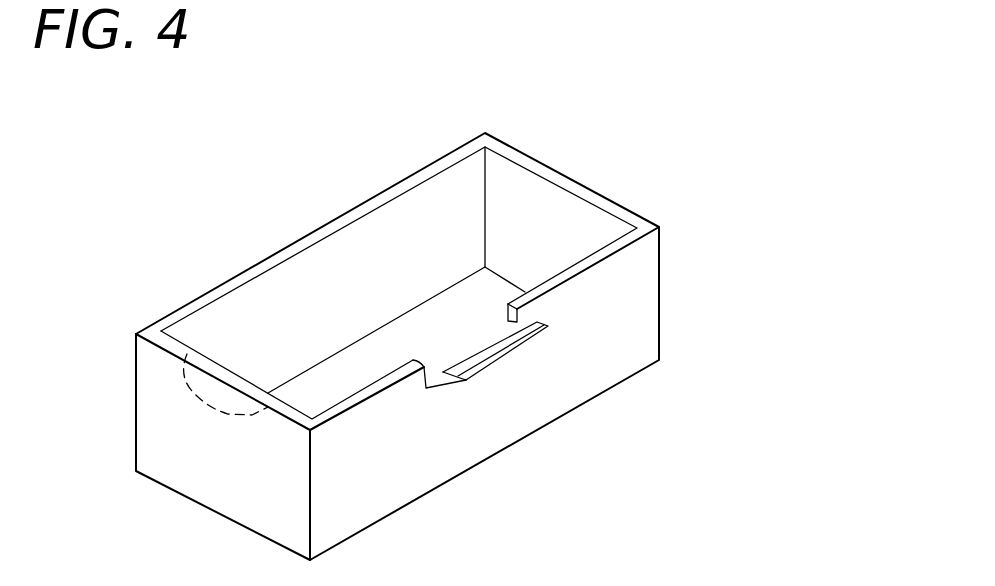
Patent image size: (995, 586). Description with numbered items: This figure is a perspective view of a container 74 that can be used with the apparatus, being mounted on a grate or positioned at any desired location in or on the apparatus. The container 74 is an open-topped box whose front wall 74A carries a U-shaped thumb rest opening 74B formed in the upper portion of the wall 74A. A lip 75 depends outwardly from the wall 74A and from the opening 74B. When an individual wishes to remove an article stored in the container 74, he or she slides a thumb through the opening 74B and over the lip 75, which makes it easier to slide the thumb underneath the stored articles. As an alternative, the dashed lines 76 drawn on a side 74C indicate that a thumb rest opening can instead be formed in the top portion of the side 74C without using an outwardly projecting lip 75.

The container 74 is at (560, 160).
The wall 74A is at (322, 500).
The U-shaped thumb rest opening 74B is at (530, 306).
The side 74C is at (145, 403).
The lip 75 is at (482, 348).
The dashed lines 76 is at (228, 415).